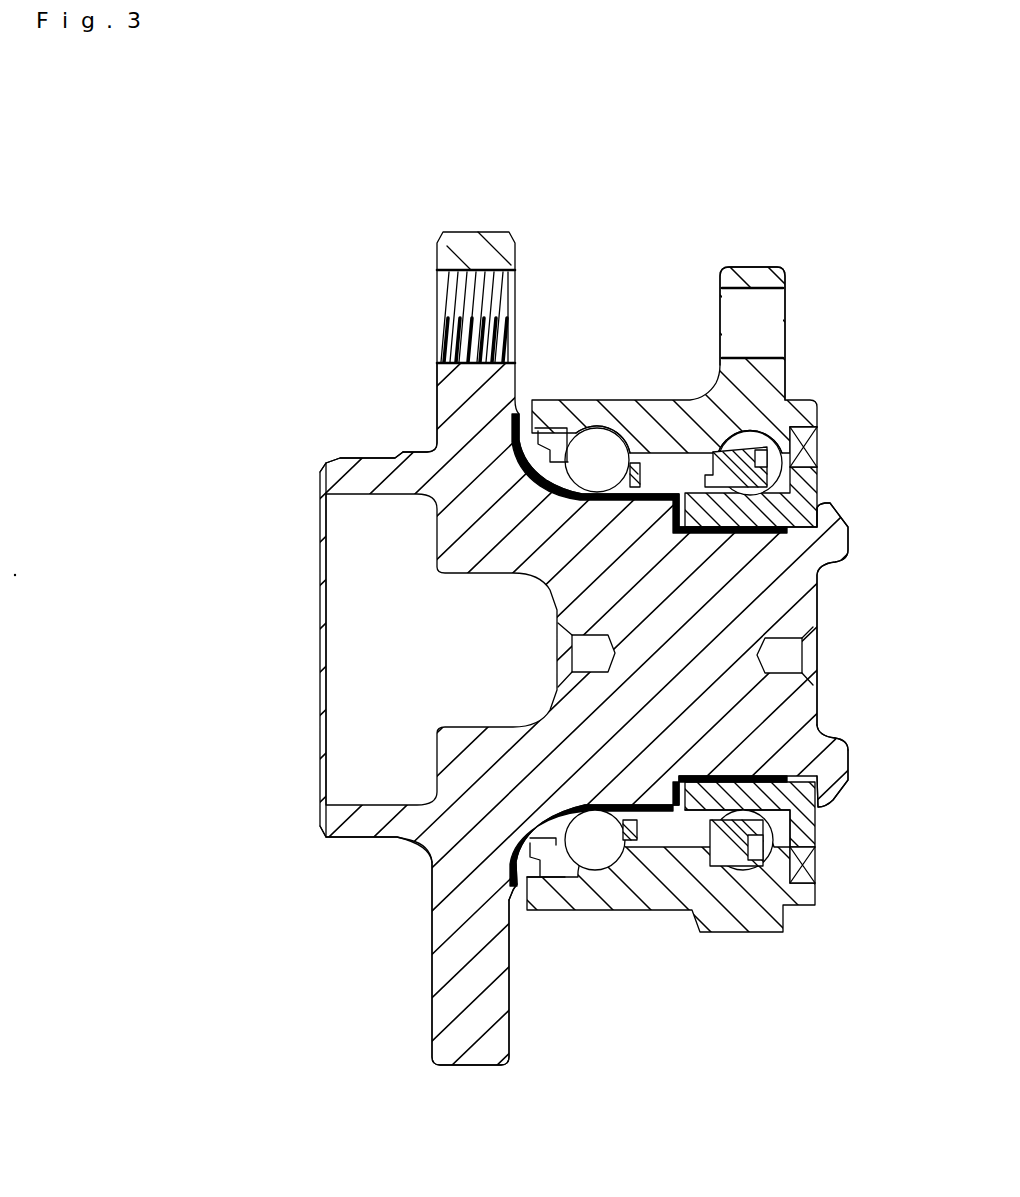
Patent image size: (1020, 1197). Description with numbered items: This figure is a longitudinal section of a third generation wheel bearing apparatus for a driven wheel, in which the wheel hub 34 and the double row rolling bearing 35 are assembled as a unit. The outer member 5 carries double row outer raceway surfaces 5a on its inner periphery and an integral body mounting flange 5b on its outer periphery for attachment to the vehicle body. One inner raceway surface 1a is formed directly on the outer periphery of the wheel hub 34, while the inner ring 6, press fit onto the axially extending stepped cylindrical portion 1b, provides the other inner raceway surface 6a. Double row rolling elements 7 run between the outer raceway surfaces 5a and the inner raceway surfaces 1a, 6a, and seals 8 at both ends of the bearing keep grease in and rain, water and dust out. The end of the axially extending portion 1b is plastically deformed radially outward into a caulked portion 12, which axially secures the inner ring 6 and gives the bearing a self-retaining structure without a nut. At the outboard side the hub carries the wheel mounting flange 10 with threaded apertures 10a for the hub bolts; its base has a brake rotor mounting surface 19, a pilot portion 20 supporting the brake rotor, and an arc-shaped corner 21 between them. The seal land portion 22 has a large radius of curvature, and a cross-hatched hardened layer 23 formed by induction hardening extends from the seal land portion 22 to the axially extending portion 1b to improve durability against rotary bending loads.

The inner raceway surface 1a is at (593, 480).
The axially extending stepped cylindrical portion 1b is at (777, 500).
The outer member 5 is at (648, 403).
The outer raceway surfaces 5a is at (597, 433).
The body mounting flange 5b is at (753, 267).
The inner ring 6 is at (800, 818).
The inner raceway surface 6a is at (805, 838).
The rolling elements 7 is at (598, 867).
The seals 8 is at (810, 873).
The wheel mounting flange 10 is at (473, 240).
The threaded apertures 10a is at (470, 277).
The caulked portion 12 is at (845, 540).
The brake rotor mounting surface 19 is at (427, 968).
The pilot portion 20 is at (397, 887).
The corner 21 is at (420, 443).
The seal land portion 22 is at (508, 887).
The hardened layer 23 is at (822, 736).
The wheel hub 34 is at (397, 464).
The double row rolling bearing 35 is at (510, 595).